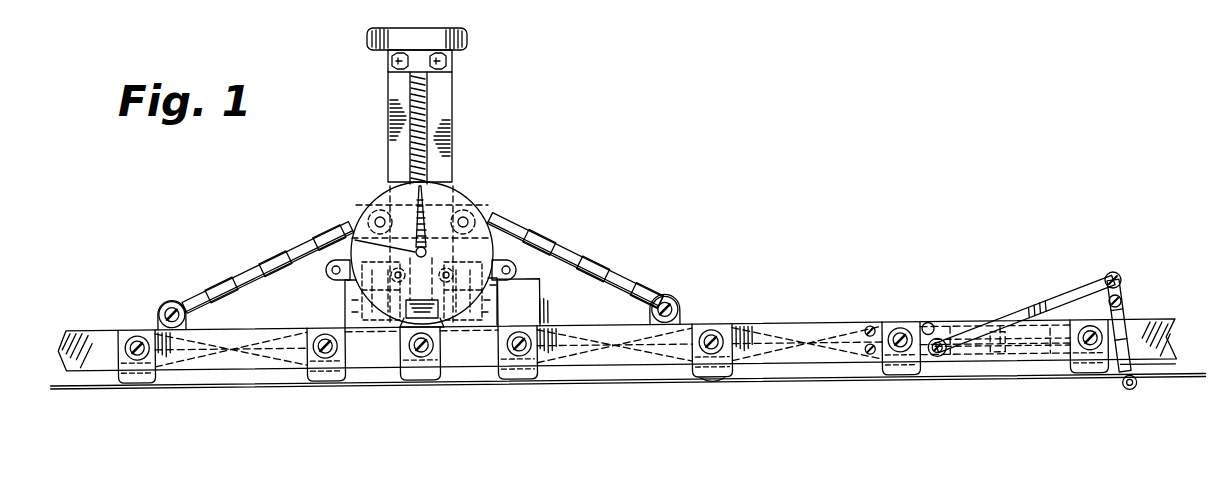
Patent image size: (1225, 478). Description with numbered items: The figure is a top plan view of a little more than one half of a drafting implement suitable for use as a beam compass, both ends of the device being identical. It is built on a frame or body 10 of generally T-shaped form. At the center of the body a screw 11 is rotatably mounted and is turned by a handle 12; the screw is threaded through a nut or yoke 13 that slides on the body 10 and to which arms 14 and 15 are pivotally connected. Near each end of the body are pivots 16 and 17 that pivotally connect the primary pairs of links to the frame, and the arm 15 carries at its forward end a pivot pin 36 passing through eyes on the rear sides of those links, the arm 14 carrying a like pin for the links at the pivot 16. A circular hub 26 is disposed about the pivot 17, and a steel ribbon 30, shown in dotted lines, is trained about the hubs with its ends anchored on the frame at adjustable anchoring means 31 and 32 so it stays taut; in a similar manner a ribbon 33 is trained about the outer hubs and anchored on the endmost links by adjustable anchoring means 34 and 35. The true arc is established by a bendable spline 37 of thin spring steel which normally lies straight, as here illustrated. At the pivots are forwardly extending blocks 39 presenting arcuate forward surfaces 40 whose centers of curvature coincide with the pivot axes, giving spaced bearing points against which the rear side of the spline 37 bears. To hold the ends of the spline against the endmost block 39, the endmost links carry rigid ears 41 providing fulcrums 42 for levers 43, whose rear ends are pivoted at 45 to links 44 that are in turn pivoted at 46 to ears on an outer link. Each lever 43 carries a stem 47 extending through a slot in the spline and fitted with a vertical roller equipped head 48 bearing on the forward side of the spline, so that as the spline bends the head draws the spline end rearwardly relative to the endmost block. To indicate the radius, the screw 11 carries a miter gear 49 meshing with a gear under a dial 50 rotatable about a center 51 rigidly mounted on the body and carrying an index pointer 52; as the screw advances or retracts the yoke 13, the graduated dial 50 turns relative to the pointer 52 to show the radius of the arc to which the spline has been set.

The frame or body 10 is at (392, 150).
The screw 11 is at (428, 104).
The handle 12 is at (466, 40).
The nut or yoke 13 is at (440, 212).
The arm 14 is at (290, 265).
The arm 15 is at (565, 255).
The pivot 16 is at (325, 330).
The pivot 17 is at (519, 350).
The circular hub 26 is at (500, 366).
The steel ribbon 30 is at (577, 350).
The anchoring means 31 is at (504, 283).
The anchoring means 32 is at (500, 300).
The ribbon 33 is at (782, 348).
The anchoring means 34 is at (1000, 340).
The anchoring means 35 is at (995, 362).
The pivot pin 36 is at (678, 302).
The bendable spline 37 is at (238, 386).
The block 39 is at (715, 378).
The arcuate forward surface 40 is at (700, 382).
The ear 41 is at (1110, 302).
The fulcrum 42 is at (1122, 300).
The lever 43 is at (1150, 322).
The link 44 is at (1070, 292).
The pivot 45 is at (1118, 278).
The pivot 46 is at (940, 362).
The stem 47 is at (1150, 372).
The roller equipped head 48 is at (425, 380).
The miter gear 49 is at (398, 328).
The dial 50 is at (478, 222).
The center 51 is at (352, 240).
The index pointer 52 is at (440, 190).